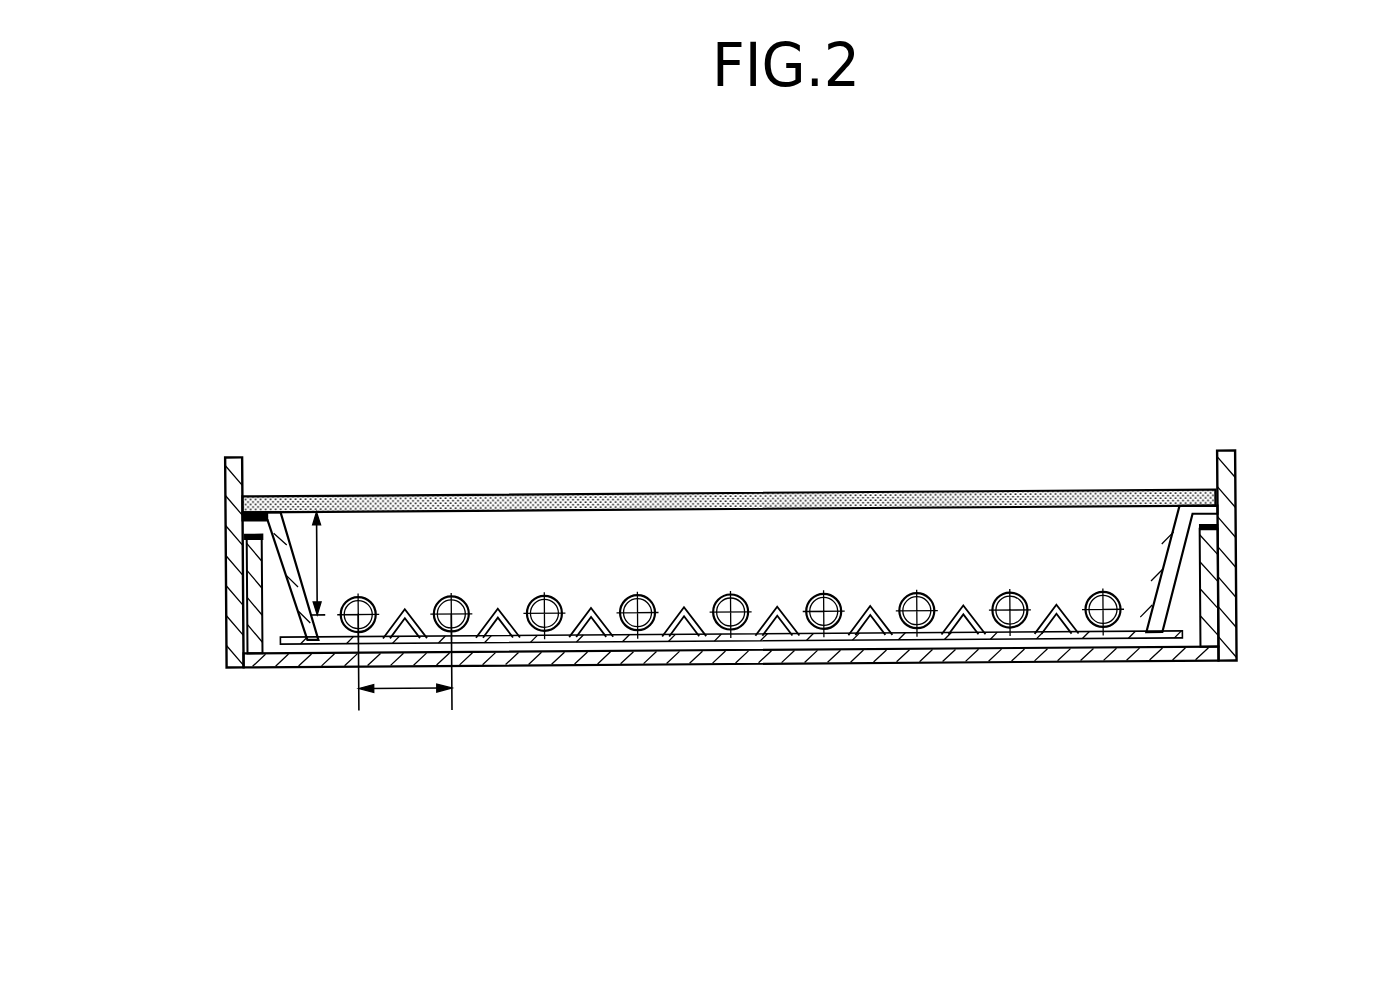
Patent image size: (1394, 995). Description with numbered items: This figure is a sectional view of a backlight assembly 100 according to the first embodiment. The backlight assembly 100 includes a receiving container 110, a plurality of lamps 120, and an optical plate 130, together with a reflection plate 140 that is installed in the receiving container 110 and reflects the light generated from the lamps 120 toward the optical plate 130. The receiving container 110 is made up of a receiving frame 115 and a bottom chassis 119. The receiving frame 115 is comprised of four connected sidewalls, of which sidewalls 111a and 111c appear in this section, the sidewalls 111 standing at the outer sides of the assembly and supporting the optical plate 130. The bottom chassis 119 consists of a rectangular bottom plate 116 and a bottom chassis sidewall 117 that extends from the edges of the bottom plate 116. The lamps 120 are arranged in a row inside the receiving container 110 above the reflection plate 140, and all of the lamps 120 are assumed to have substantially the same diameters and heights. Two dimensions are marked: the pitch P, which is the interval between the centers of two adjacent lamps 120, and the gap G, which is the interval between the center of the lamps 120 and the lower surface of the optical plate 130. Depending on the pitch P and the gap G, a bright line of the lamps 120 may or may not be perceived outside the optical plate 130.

The backlight assembly 100 is at (968, 390).
The receiving container 110 is at (1290, 646).
The sidewall 111 is at (1232, 600).
The sidewall 111a is at (1232, 493).
The sidewall 111c is at (233, 491).
The receiving frame 115 is at (1252, 545).
The bottom plate 116 is at (895, 660).
The bottom chassis sidewall 117 is at (1193, 628).
The bottom chassis 119 is at (644, 668).
The lamps 120 is at (537, 640).
The optical plate 130 is at (771, 493).
The reflection plate 140 is at (781, 632).
The gap G is at (326, 563).
The pitch P is at (405, 671).